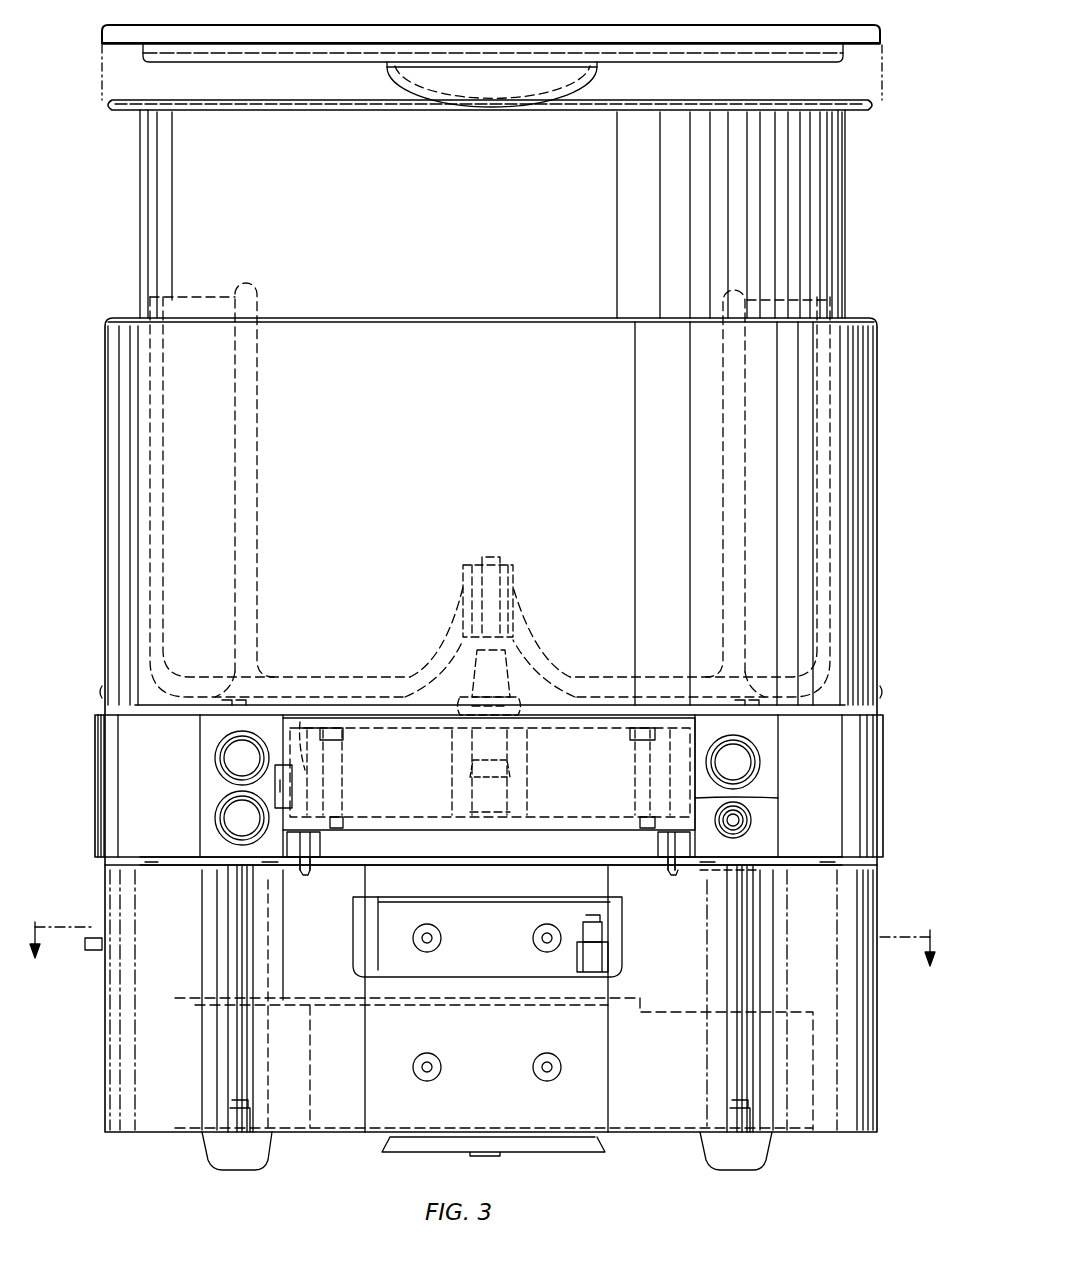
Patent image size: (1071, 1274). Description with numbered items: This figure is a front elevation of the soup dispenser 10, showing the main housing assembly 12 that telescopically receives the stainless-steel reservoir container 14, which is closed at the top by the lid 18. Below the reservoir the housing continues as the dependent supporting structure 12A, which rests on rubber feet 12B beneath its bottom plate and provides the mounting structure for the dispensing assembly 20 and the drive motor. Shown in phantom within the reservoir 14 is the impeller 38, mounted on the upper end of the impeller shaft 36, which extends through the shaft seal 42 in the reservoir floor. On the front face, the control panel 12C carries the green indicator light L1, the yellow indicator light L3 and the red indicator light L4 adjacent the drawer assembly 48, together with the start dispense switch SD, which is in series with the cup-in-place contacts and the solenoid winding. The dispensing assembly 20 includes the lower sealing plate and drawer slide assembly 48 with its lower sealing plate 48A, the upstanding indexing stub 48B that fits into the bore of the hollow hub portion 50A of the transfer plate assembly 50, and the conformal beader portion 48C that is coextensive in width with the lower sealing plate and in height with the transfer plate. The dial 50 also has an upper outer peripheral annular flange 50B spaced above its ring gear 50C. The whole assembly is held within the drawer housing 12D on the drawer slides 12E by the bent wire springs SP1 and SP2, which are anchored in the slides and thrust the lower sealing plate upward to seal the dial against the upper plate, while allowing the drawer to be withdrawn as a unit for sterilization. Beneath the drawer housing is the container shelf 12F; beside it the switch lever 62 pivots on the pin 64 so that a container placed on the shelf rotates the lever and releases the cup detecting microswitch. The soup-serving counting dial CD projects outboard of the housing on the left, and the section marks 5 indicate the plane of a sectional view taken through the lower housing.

The soup dispenser 10 is at (918, 312).
The main housing assembly 12 is at (885, 448).
The dependent supporting structure 12A is at (878, 1068).
The rubber feet 12B is at (215, 1152).
The control panel 12C is at (95, 750).
The drawer housing 12D is at (625, 840).
The drawer slides 12E is at (322, 843).
The container shelf 12F is at (520, 985).
The reservoir container 14 is at (846, 195).
The lid 18 is at (885, 40).
The dispensing assembly 20 is at (405, 698).
The impeller shaft 36 is at (508, 640).
The impeller 38 is at (250, 460).
The shaft seal 42 is at (510, 668).
The lower sealing plate and drawer slide assembly 48 is at (590, 820).
The lower sealing plate 48A is at (366, 812).
The indexing stub 48B is at (520, 800).
The conformal beader portion 48C is at (740, 800).
The transfer plate assembly 50 is at (708, 712).
The hollow hub portion 50A is at (663, 748).
The upper outer peripheral annular flange 50B is at (323, 740).
The ring gear 50C is at (312, 735).
The switch lever 62 is at (612, 956).
The pin 64 is at (588, 932).
The green indicator light L1 is at (742, 758).
The yellow indicator light L3 is at (228, 758).
The red indicator light L4 is at (228, 812).
The start dispense switch SD is at (750, 820).
The bent wire spring SP1 is at (306, 875).
The bent wire spring SP2 is at (700, 900).
The soup-serving counting dial CD is at (96, 952).
The section line 5- 5 is at (480, 958).